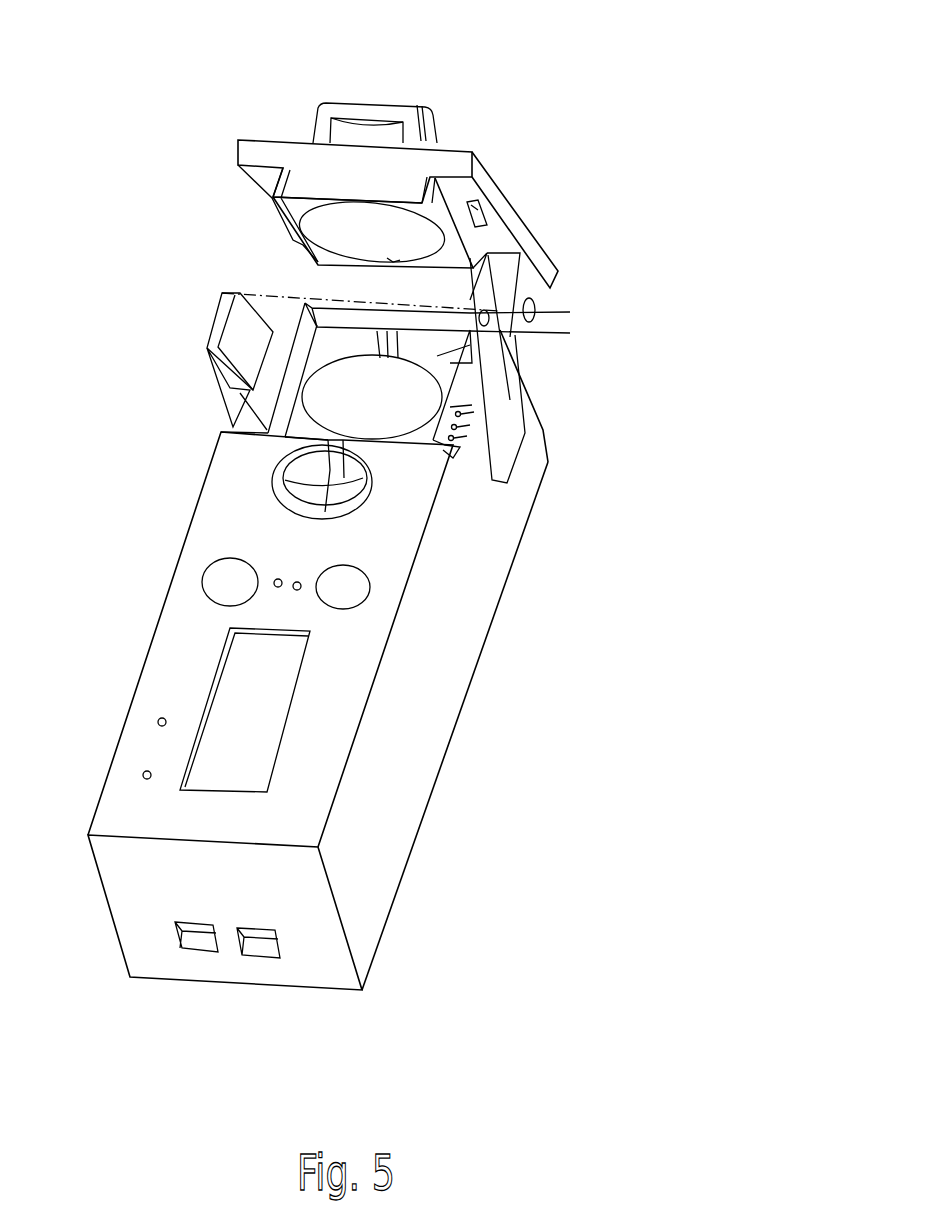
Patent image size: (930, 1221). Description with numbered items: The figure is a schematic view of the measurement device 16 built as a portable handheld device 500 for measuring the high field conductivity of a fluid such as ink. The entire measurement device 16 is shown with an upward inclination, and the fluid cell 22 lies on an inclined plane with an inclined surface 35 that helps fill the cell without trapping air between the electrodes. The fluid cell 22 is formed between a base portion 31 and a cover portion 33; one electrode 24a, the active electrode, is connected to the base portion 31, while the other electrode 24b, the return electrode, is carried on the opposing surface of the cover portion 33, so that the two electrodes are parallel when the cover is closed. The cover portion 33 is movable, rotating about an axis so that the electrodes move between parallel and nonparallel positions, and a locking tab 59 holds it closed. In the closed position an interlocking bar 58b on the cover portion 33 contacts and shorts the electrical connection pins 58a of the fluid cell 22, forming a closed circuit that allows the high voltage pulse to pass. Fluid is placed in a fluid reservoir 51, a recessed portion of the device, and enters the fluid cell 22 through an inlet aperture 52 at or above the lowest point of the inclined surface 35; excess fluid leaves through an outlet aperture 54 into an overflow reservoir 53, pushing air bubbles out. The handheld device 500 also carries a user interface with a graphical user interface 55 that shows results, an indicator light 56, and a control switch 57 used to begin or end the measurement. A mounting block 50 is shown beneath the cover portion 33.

The measurement device 16 is at (480, 97).
The cover portion 33 is at (307, 158).
The one electrode 24a is at (347, 378).
The other electrode 24b is at (312, 227).
The locking tab 59 is at (215, 330).
The fluid cell 22 is at (267, 420).
The inlet aperture 52 is at (330, 455).
The fluid reservoir 51 is at (315, 488).
The mounting block 50 is at (393, 260).
The interlocking bar 58b is at (483, 202).
The overflow reservoir 53 is at (450, 352).
The outlet aperture 54 is at (518, 306).
The base portion 31 is at (517, 360).
The electrical connection pins 58a is at (458, 427).
The inclined surface 35 is at (427, 430).
The control switch 57 is at (237, 565).
The indicator light 56 is at (296, 591).
The graphical user interface 55 is at (273, 747).
The handheld device 500 is at (523, 942).